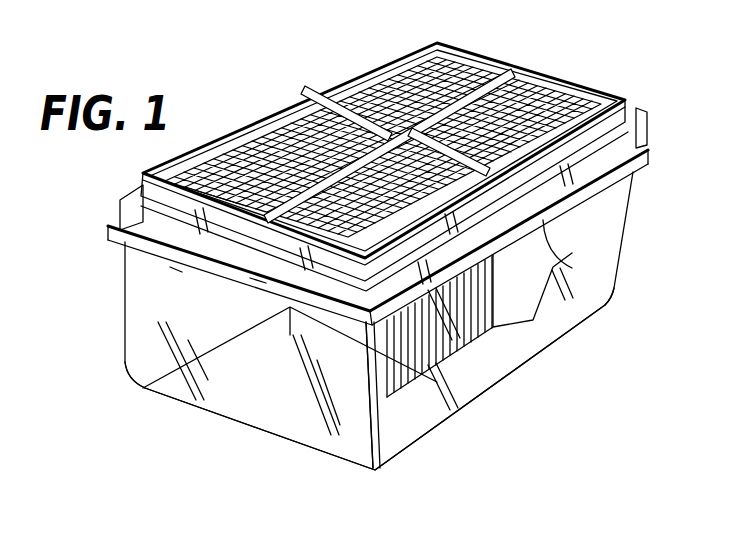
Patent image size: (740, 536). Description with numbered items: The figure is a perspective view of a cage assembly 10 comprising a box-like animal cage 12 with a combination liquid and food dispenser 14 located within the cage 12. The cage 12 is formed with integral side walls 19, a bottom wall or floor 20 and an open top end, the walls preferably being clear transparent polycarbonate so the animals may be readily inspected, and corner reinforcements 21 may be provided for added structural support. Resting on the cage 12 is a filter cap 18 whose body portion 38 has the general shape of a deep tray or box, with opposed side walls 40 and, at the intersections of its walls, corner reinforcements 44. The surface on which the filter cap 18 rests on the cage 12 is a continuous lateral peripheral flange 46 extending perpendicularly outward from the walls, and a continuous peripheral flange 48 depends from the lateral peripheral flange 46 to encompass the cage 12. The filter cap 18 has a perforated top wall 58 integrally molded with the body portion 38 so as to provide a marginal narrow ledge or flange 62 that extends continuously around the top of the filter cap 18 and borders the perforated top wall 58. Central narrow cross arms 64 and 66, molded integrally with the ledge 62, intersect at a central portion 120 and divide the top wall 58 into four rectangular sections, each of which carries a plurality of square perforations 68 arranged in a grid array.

The cage assembly 10 is at (648, 182).
The animal cage 12 is at (580, 296).
The combination liquid and food dispenser 14 is at (315, 337).
The filter cap 18 is at (630, 84).
The side walls 19 is at (462, 392).
The bottom wall or floor 20 is at (402, 428).
The corner reinforcements 21 is at (115, 305).
The body portion 38 is at (141, 184).
The side walls 40 is at (494, 208).
The corner reinforcements 44 is at (120, 212).
The lateral peripheral flange 46 is at (258, 277).
The peripheral flange 48 is at (175, 270).
The perforated top wall 58 is at (410, 86).
The ledge or flange 62 is at (598, 93).
The cross arm 64 is at (320, 102).
The cross arm 66 is at (508, 84).
The perforations 68 is at (264, 150).
The central portion 120 is at (352, 88).